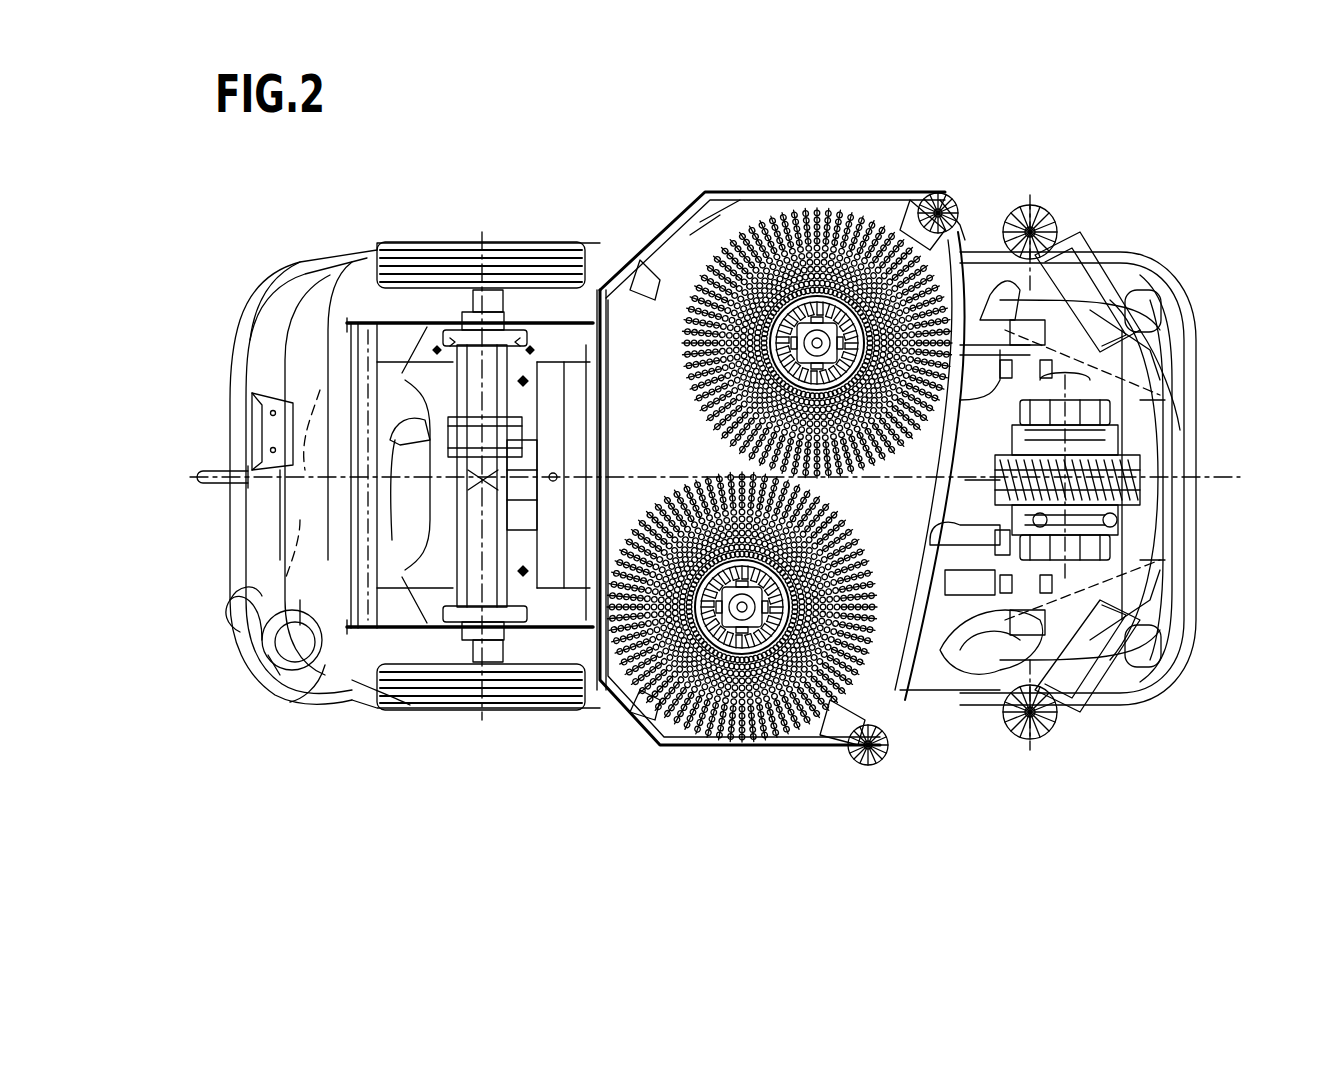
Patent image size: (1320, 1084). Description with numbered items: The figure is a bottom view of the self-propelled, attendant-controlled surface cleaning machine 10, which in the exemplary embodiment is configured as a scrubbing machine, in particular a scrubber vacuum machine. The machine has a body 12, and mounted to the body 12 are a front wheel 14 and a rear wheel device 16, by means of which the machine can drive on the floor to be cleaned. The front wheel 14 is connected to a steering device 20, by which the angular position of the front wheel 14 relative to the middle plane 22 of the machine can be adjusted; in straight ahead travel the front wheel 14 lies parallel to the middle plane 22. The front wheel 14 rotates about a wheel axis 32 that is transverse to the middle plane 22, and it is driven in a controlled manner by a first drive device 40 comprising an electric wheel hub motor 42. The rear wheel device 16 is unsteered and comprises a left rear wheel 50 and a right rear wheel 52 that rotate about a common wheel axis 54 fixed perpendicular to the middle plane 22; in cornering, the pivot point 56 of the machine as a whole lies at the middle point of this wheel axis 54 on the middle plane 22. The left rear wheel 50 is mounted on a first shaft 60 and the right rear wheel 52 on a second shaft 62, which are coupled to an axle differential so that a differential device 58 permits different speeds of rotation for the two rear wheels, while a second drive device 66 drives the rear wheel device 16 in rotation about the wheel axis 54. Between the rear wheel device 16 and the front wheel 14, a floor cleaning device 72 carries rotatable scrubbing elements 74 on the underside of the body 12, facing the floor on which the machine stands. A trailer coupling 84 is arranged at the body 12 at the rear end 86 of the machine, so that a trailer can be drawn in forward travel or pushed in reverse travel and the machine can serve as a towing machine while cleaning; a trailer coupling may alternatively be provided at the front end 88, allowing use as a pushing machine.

The surface cleaning machine 10 is at (572, 172).
The body 12 is at (365, 712).
The front wheel 14 is at (1080, 640).
The rear wheel device 16 is at (318, 690).
The steering device 20 is at (1130, 440).
The middle plane 22 is at (240, 505).
The wheel axis 32 is at (1130, 300).
The first drive device 40 is at (1000, 670).
The wheel hub motor 42 is at (1175, 640).
The left rear wheel 50 is at (505, 243).
The right rear wheel 52 is at (466, 710).
The wheel axis 54 is at (480, 232).
The pivot point 56 is at (500, 650).
The differential device 58 is at (508, 450).
The first shaft 60 is at (445, 292).
The second shaft 62 is at (455, 712).
The second drive device 66 is at (510, 520).
The floor cleaning device 72 is at (876, 180).
The scrubbing elements 74 is at (763, 752).
The trailer coupling 84 is at (212, 468).
The rear end 86 is at (235, 336).
The front end 88 is at (1205, 520).